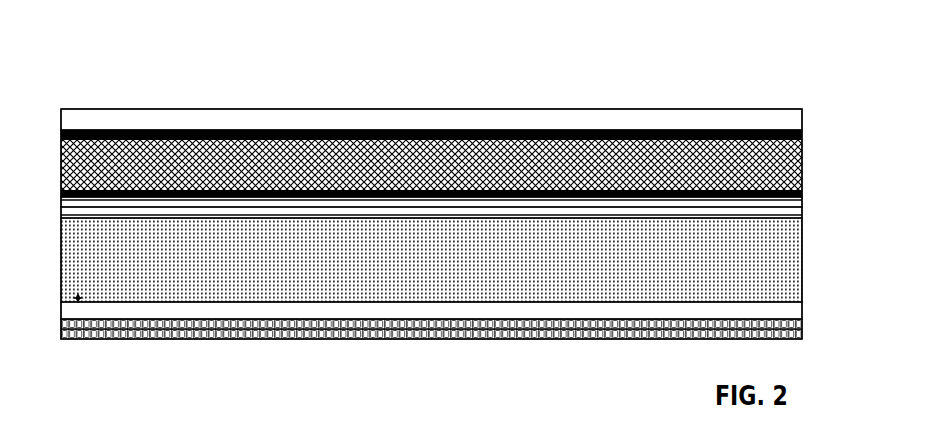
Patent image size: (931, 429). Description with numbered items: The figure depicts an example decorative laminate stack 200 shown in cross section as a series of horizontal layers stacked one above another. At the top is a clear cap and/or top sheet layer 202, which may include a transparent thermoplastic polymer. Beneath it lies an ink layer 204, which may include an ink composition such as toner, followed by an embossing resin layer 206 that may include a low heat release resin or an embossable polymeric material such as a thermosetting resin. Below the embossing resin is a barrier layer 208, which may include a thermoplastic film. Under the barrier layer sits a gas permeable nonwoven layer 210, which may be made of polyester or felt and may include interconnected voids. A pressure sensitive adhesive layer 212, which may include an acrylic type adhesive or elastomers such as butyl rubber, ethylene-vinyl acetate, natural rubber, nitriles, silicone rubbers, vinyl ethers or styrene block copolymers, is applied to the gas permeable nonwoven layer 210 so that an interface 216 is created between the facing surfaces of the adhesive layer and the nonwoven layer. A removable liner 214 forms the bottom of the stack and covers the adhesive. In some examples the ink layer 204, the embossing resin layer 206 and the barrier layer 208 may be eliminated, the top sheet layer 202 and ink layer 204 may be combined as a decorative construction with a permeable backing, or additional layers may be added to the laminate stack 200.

The laminate stack 200 is at (151, 57).
The clear cap and/or top sheet layer 202 is at (803, 128).
The ink layer 204 is at (803, 139).
The embossing resin layer 206 is at (803, 177).
The barrier layer 208 is at (803, 213).
The gas permeable nonwoven layer 210 is at (803, 282).
The pressure sensitive adhesive layer 212 is at (803, 317).
The removable liner 214 is at (803, 332).
The interface 216 is at (77, 297).